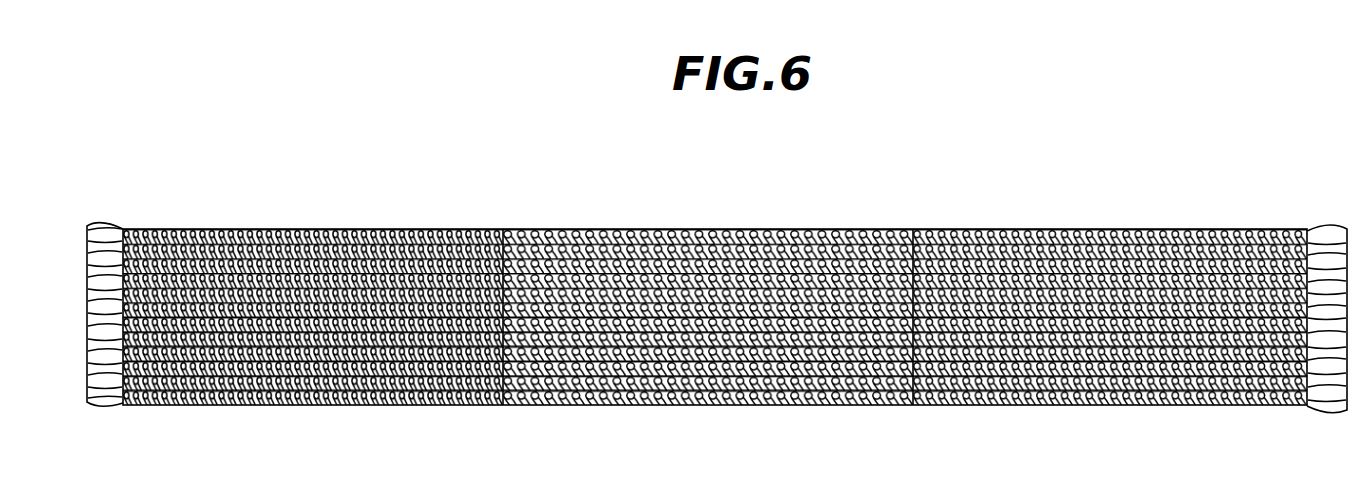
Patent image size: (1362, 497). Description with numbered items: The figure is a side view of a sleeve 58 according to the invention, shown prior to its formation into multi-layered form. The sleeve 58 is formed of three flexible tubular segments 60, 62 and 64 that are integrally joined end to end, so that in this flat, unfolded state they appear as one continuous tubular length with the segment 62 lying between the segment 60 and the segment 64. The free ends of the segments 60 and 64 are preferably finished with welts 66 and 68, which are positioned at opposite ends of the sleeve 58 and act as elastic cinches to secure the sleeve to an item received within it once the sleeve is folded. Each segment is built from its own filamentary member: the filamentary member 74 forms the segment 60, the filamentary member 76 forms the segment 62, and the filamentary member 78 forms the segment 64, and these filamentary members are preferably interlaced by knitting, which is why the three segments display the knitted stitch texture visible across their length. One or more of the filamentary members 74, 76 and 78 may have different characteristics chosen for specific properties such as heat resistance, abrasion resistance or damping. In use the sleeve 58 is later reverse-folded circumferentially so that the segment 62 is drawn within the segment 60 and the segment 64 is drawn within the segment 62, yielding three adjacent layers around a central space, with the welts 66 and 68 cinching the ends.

The sleeve 58 is at (845, 215).
The flexible tubular segment 60 is at (1118, 231).
The flexible tubular segment 62 is at (700, 229).
The flexible tubular segment 64 is at (280, 229).
The welt 66 is at (1325, 407).
The welt 68 is at (97, 405).
The filamentary member 74 is at (1043, 378).
The filamentary member 76 is at (678, 383).
The filamentary member 78 is at (323, 382).